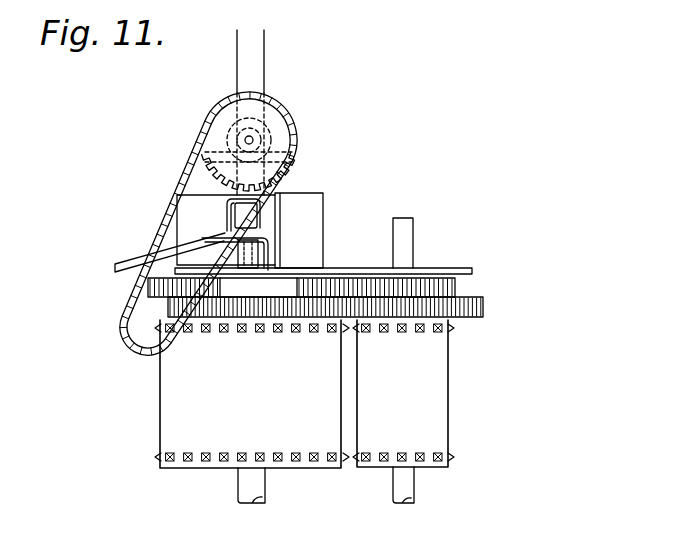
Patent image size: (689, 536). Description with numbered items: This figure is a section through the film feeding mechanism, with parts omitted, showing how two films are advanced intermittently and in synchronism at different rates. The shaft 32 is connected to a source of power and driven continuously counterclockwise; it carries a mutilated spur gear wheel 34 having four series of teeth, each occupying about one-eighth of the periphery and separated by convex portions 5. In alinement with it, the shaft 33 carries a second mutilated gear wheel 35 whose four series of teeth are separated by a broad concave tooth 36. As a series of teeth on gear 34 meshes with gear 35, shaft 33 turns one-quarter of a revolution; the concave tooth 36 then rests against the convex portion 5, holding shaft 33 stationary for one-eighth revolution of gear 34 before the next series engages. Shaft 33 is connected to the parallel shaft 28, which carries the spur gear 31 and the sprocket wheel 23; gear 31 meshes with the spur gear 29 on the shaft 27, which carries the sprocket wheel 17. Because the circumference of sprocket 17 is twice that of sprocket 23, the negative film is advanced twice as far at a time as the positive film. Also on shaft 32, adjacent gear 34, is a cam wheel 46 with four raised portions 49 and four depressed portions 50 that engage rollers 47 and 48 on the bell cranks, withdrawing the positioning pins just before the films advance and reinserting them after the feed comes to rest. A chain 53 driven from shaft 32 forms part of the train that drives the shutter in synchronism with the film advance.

The convex portions 5 is at (250, 288).
The sprocket wheel 17 is at (175, 418).
The sprocket wheel 23 is at (438, 423).
The shaft 27 is at (247, 485).
The shaft 28 is at (402, 490).
The spur gear 29 is at (313, 318).
The spur gear 31 is at (402, 303).
The shaft 32 is at (264, 52).
The shaft 33 is at (407, 233).
The mutilated spur gear wheel 34 is at (322, 288).
The mutilated spur gear wheel 35 is at (540, 279).
The broad concave tooth 36 is at (405, 283).
The cam wheel 46 is at (305, 200).
The roller 47 is at (246, 214).
The roller 48 is at (172, 268).
The raised portions 49 is at (270, 205).
The depressed portions 50 is at (312, 214).
The chain 53 is at (152, 222).